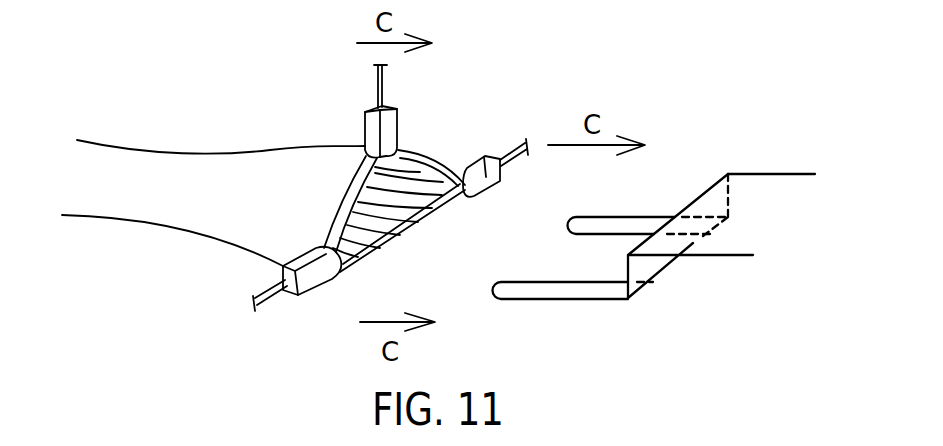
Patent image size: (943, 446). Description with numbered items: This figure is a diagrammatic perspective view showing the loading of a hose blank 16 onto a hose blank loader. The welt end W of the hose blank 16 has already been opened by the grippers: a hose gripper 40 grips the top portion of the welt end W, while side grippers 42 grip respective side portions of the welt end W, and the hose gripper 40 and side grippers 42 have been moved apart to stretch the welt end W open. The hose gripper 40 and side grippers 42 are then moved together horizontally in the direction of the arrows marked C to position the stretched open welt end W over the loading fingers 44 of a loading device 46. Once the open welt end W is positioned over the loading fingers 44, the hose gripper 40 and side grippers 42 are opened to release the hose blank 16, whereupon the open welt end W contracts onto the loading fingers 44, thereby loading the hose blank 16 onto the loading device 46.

The hose blank 16 is at (183, 151).
The welt end W is at (400, 150).
The hose gripper 40 is at (373, 100).
The side grippers 42 is at (481, 156).
The loading fingers 44 is at (637, 220).
The loading device 46 is at (758, 160).